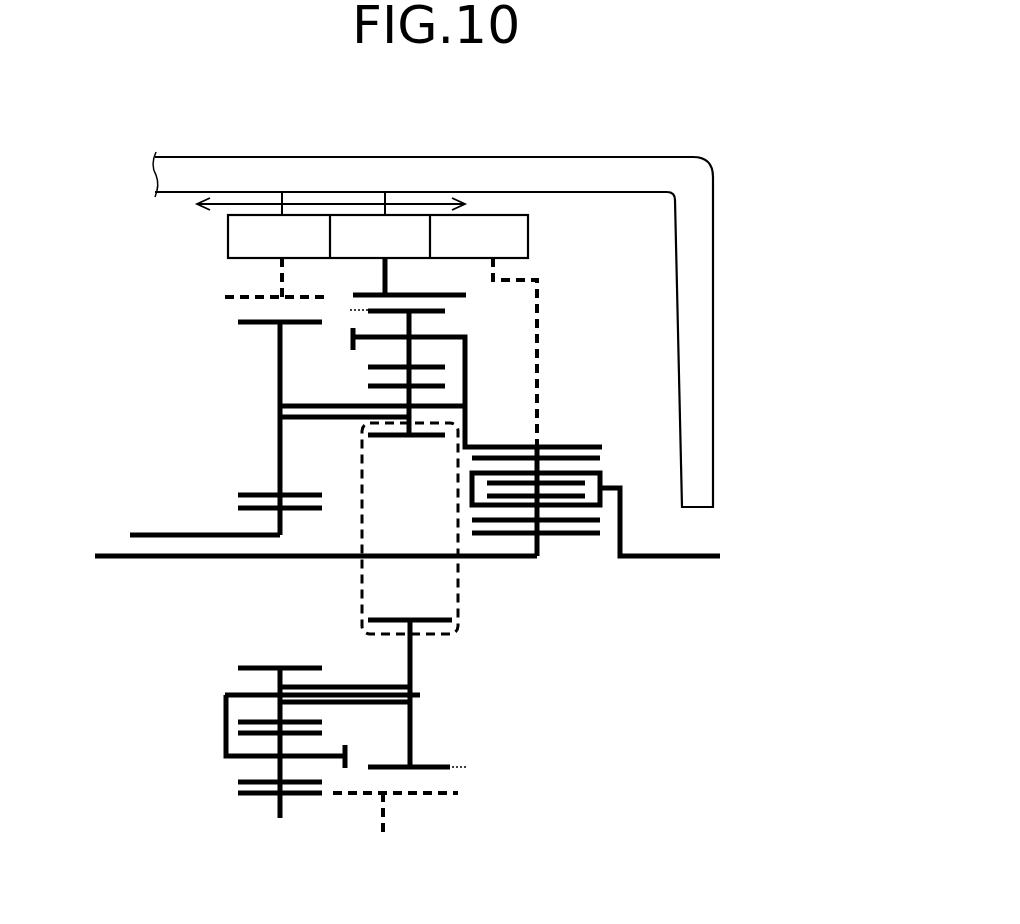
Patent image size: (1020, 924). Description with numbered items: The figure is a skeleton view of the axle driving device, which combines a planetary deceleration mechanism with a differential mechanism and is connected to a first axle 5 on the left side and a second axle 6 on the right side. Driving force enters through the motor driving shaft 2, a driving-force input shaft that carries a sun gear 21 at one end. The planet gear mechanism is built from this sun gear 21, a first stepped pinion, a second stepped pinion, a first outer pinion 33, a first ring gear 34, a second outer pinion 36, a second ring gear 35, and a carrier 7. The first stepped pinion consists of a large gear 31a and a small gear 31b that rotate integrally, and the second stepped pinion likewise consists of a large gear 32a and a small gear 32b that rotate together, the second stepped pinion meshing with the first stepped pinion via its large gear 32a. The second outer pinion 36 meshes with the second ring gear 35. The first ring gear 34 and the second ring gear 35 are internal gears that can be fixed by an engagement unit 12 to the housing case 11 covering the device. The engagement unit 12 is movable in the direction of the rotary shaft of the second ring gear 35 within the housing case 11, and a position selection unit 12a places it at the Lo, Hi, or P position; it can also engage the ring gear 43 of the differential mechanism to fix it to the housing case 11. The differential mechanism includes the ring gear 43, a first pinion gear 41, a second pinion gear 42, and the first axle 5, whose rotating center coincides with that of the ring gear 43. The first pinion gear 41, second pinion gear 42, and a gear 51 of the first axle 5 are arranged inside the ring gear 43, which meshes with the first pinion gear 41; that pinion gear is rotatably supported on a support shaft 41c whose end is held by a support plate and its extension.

The motor driving shaft 2 is at (157, 533).
The first axle 5 is at (128, 560).
The second axle 6 is at (650, 560).
The carrier 7 is at (468, 345).
The housing case 11 is at (670, 172).
The engagement unit 12 is at (384, 287).
The position selection unit 12a is at (513, 212).
The sun gear 21 is at (238, 506).
The large gear 31a is at (266, 493).
The small gear 31b is at (400, 440).
The large gear 32a is at (446, 763).
The small gear 32b is at (270, 667).
The first outer pinion 33 is at (238, 782).
The first ring gear 34 is at (250, 292).
The second ring gear 35 is at (404, 293).
The second outer pinion 36 is at (447, 311).
The first pinion gear 41 is at (602, 456).
The support shaft 41c is at (602, 475).
The second pinion gear 42 is at (602, 518).
The ring gear 43 is at (553, 446).
The gear 51 is at (561, 536).